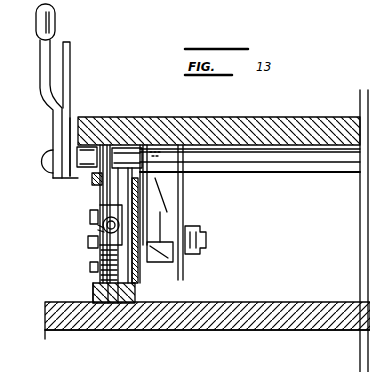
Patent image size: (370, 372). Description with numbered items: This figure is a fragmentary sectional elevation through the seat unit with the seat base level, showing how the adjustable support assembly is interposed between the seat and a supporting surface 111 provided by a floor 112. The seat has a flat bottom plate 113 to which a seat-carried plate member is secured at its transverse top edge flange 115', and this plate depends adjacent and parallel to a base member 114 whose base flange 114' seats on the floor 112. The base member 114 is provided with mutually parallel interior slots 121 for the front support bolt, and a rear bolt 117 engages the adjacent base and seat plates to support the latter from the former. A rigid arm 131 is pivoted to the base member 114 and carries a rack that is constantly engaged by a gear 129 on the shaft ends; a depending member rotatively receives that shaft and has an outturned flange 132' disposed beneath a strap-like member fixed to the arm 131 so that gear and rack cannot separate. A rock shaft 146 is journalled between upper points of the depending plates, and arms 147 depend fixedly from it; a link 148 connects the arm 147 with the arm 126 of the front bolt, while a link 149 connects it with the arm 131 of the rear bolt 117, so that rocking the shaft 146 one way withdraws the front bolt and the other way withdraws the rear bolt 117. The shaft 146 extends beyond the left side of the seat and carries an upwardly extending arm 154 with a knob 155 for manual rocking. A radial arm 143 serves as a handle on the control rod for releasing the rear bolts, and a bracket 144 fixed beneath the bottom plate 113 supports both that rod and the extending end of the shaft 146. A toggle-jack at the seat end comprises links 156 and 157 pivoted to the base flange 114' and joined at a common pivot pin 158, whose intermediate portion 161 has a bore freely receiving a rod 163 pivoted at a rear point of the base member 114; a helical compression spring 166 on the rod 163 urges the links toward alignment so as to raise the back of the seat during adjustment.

The knob 155 is at (56, 22).
The radial arm 143 is at (67, 71).
The bracket 144 is at (72, 145).
The arm 154 is at (57, 128).
The gear 129 is at (110, 118).
The top edge flange 115' is at (165, 188).
The bottom plate 113 is at (263, 124).
The rock shaft 146 is at (302, 172).
The arm 147 is at (184, 195).
The link 149 is at (193, 222).
The link 148 is at (203, 231).
The arm 126 is at (169, 210).
The rigid arm 131 is at (77, 181).
The outturned flange 132' is at (68, 186).
The slot 121 is at (108, 216).
The link 157 is at (100, 226).
The rod 163 is at (89, 239).
The pivot pin 158 is at (90, 242).
The link 156 is at (99, 266).
The bolt 117 is at (141, 266).
The base member 114 is at (139, 293).
The base flange 114' is at (64, 292).
The intermediate portion 161 is at (118, 303).
The helical compression spring 166 is at (108, 303).
The supporting surface 111 is at (295, 304).
The floor 112 is at (291, 327).